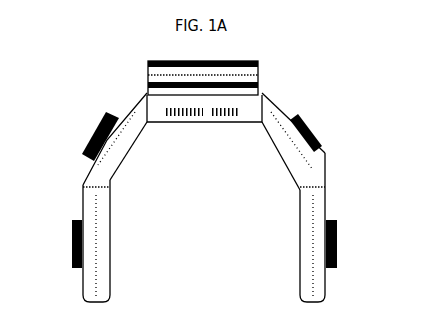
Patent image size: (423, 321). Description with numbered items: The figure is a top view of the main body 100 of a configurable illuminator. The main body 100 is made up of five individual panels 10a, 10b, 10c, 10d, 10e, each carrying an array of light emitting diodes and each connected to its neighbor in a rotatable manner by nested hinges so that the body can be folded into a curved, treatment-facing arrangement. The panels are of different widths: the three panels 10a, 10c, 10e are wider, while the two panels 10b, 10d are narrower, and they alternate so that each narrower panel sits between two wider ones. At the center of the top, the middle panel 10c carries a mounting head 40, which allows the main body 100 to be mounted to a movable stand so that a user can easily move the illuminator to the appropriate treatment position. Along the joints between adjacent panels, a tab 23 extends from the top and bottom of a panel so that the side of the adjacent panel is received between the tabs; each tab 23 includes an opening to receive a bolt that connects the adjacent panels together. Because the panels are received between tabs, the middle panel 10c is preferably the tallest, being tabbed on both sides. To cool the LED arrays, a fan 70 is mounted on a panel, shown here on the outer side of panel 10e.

The main body 100 is at (321, 50).
The mounting head 40 is at (257, 61).
The tab 23 is at (262, 102).
The panel 10a is at (97, 277).
The panel 10b is at (97, 173).
The panel 10c is at (153, 105).
The panel 10d is at (283, 118).
The panel 10e is at (318, 205).
The fan 70 is at (337, 234).